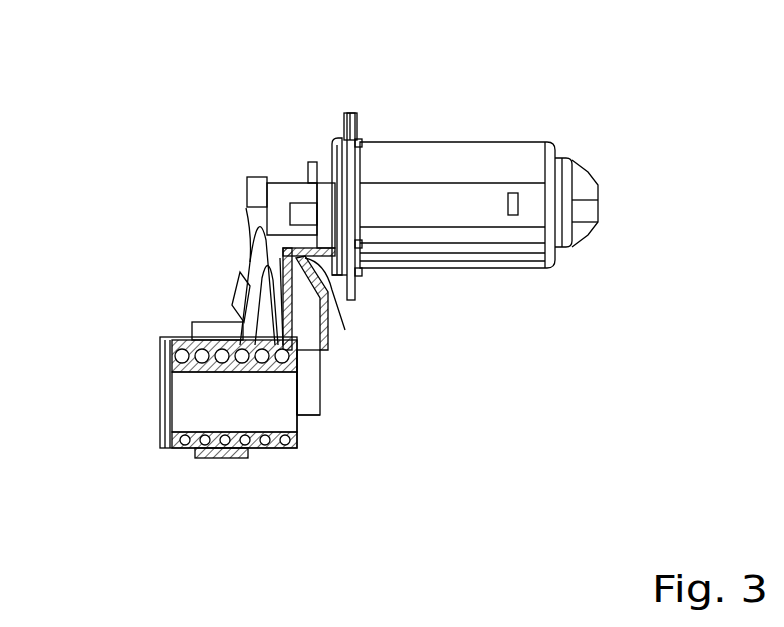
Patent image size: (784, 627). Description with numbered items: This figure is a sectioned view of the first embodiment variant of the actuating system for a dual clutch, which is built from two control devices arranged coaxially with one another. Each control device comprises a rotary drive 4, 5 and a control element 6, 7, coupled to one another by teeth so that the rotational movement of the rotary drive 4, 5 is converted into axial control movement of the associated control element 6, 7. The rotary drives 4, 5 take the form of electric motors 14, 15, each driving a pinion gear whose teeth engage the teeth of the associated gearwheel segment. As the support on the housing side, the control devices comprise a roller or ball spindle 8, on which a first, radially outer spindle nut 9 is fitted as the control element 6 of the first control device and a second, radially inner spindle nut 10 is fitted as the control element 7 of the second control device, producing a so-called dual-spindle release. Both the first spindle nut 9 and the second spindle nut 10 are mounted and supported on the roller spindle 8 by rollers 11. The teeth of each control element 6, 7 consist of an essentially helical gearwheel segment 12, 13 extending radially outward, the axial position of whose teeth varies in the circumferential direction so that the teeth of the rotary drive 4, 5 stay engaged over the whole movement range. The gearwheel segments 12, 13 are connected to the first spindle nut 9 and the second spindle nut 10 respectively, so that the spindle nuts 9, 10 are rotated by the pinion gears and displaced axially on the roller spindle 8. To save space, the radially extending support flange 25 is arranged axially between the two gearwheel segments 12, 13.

The rotary drive 4 is at (463, 153).
The rotary drive 5 is at (465, 265).
The control element 6 is at (195, 330).
The control element 7 is at (300, 413).
The roller spindle 8 is at (160, 352).
The first spindle nut 9 is at (163, 338).
The second spindle nut 10 is at (243, 370).
The rollers 11 is at (248, 458).
The gearwheel segment 12 is at (258, 237).
The gearwheel segment 13 is at (322, 262).
The electric motor 14 is at (525, 150).
The electric motor 15 is at (518, 260).
The support flange 25 is at (300, 193).